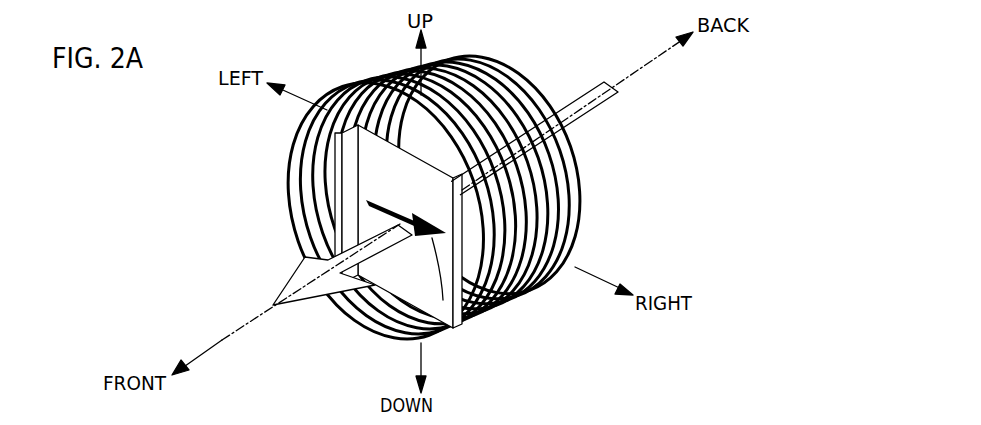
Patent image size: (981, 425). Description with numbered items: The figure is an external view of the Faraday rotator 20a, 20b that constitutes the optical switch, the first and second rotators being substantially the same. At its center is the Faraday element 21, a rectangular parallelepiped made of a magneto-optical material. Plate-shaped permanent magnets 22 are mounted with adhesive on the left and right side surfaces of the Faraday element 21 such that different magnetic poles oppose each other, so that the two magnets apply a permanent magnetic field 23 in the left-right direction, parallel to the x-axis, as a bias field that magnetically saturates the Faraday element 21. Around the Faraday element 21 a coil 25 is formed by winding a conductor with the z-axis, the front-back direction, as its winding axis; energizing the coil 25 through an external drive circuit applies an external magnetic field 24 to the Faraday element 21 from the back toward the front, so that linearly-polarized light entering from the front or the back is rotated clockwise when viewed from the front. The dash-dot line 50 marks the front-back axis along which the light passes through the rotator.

The first Faraday rotator 20a is at (427, 184).
The second Faraday rotator 20b is at (360, 62).
The Faraday element 21 is at (383, 180).
The permanent magnets 22 is at (333, 160).
The permanent magnetic field 23 is at (443, 300).
The external magnetic field 24 is at (300, 282).
The coil 25 is at (573, 190).
The optical axis 50 is at (230, 328).